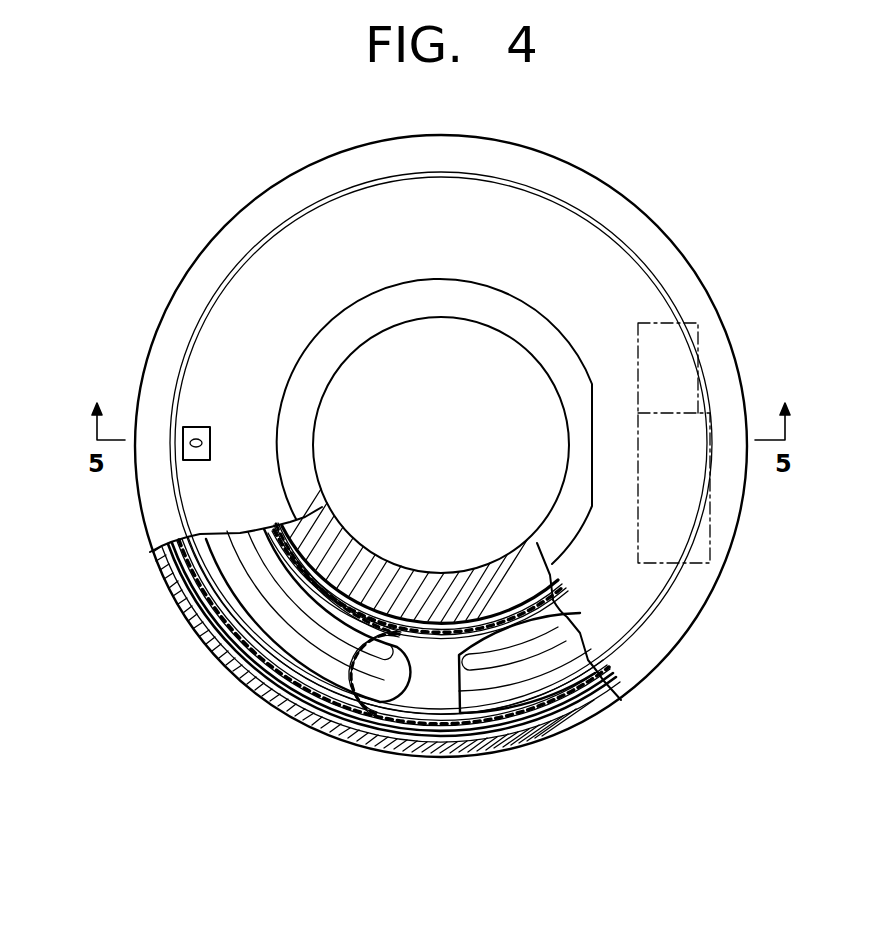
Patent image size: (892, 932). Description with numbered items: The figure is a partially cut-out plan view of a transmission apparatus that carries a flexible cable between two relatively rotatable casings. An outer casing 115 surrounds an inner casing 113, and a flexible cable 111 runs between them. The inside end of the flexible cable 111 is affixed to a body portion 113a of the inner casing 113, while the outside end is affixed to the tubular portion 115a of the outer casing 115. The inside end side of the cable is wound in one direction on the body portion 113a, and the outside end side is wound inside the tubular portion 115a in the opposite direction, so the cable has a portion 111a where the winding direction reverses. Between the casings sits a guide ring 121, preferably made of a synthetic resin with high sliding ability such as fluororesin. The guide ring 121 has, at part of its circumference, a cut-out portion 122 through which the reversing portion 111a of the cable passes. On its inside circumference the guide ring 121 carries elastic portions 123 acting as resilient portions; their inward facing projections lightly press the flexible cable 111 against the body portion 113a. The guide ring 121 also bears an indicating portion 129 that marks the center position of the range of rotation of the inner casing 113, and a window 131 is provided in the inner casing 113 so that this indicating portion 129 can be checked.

The flexible cable 111 is at (478, 595).
The portion where the winding direction reverses 111a is at (417, 727).
The inner casing 113 is at (272, 377).
The body portion 113a is at (355, 545).
The outer casing 115 is at (207, 254).
The tubular portion 115a is at (210, 648).
The guide ring 121 is at (232, 590).
The cut-out portion 122 is at (447, 698).
The elastic portions 123 is at (345, 637).
The indicating portion 129 is at (190, 425).
The window 131 is at (187, 467).